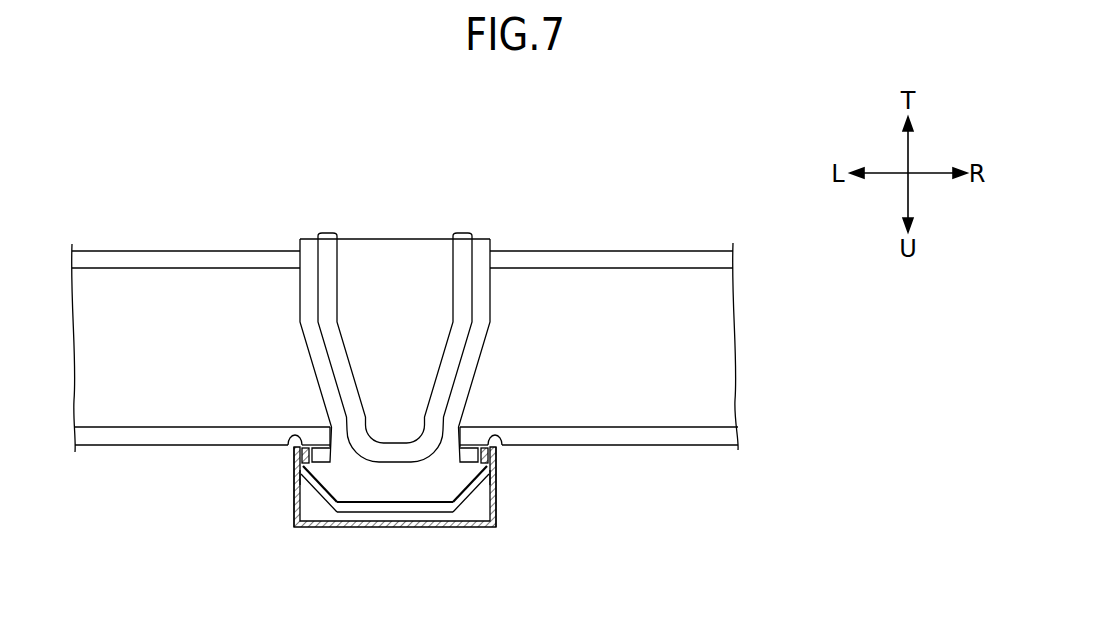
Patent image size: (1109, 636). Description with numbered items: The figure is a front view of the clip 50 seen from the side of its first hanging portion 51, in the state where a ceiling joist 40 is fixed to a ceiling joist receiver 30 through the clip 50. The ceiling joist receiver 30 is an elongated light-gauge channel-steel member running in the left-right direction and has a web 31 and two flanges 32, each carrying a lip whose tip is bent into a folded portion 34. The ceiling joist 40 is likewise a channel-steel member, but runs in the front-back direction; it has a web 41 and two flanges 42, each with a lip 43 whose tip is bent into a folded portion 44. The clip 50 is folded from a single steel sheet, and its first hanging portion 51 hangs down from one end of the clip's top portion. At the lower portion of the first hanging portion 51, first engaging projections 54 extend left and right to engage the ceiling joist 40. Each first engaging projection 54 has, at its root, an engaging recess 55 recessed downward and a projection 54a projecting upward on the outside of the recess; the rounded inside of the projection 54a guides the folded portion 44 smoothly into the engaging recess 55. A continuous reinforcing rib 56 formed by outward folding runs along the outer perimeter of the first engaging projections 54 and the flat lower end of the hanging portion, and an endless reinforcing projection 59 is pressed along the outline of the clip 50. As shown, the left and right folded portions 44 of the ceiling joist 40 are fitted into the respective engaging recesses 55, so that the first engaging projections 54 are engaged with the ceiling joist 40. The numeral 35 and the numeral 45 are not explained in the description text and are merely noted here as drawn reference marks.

The ceiling joist receiver 30 is at (462, 335).
The web 31 is at (718, 347).
The flange 32 is at (710, 243).
The folded portion 34 is at (716, 258).
The flow path 35 is at (671, 386).
The ceiling joist 40 is at (394, 541).
The web 41 is at (381, 528).
The flange 42 is at (296, 502).
The lip 43 is at (296, 447).
The folded portion 44 is at (324, 444).
The through hole 45 is at (316, 412).
The clip 50 is at (419, 302).
The first hanging portion 51 is at (482, 280).
The first engaging projection 54 is at (310, 470).
The projection 54a is at (297, 477).
The engaging recess 55 is at (330, 512).
The reinforcing rib 56 is at (425, 507).
The reinforcing projection 59 is at (463, 243).